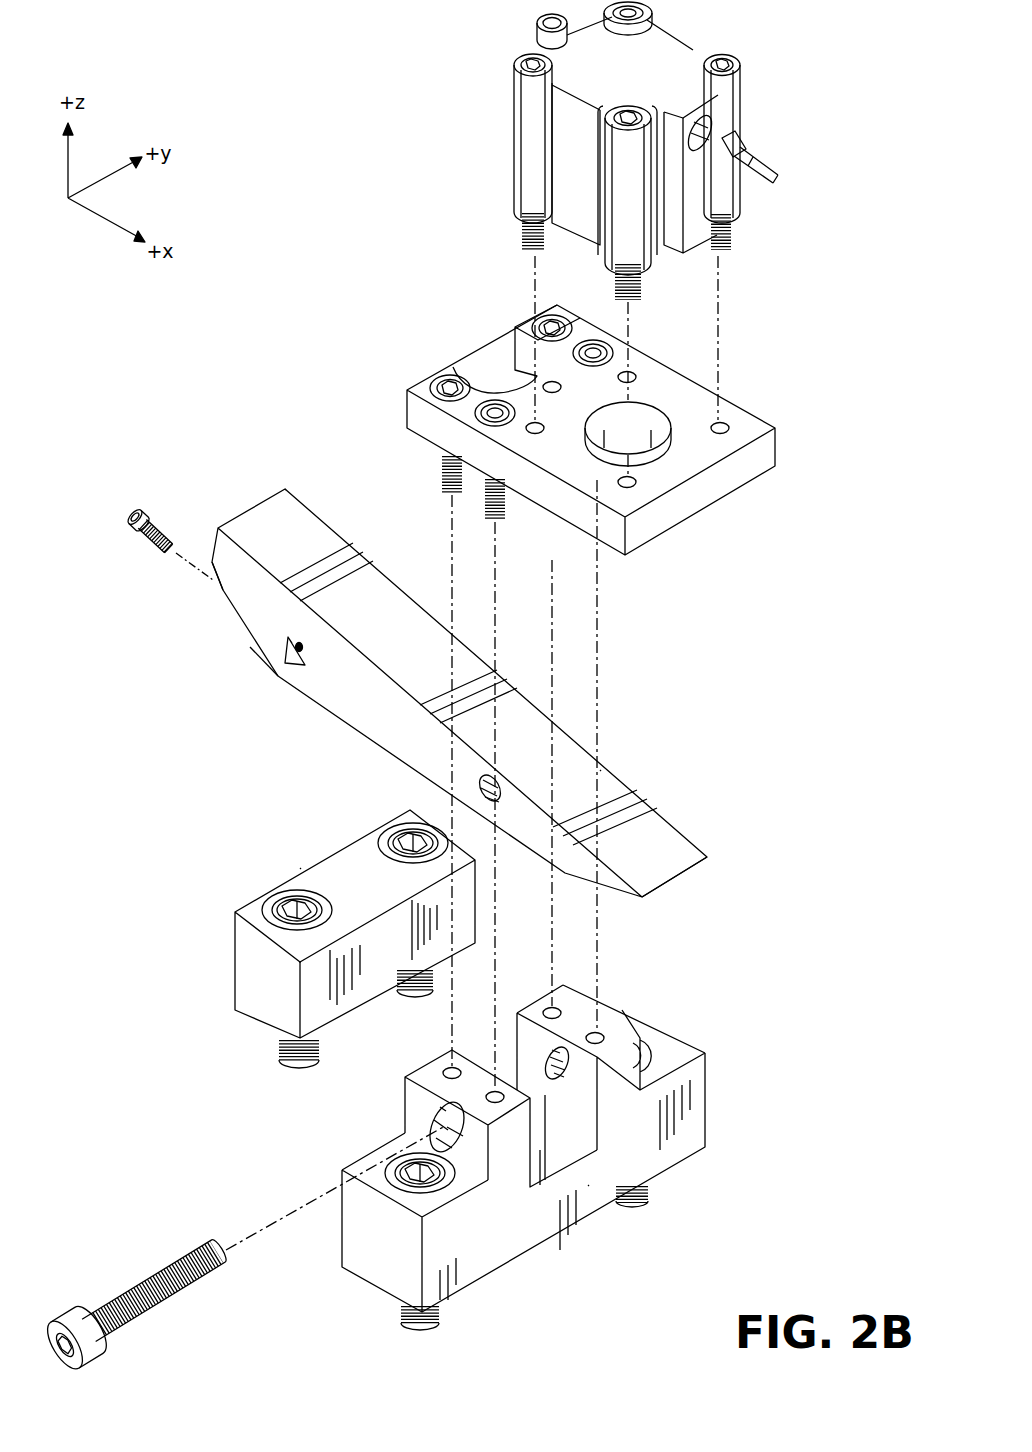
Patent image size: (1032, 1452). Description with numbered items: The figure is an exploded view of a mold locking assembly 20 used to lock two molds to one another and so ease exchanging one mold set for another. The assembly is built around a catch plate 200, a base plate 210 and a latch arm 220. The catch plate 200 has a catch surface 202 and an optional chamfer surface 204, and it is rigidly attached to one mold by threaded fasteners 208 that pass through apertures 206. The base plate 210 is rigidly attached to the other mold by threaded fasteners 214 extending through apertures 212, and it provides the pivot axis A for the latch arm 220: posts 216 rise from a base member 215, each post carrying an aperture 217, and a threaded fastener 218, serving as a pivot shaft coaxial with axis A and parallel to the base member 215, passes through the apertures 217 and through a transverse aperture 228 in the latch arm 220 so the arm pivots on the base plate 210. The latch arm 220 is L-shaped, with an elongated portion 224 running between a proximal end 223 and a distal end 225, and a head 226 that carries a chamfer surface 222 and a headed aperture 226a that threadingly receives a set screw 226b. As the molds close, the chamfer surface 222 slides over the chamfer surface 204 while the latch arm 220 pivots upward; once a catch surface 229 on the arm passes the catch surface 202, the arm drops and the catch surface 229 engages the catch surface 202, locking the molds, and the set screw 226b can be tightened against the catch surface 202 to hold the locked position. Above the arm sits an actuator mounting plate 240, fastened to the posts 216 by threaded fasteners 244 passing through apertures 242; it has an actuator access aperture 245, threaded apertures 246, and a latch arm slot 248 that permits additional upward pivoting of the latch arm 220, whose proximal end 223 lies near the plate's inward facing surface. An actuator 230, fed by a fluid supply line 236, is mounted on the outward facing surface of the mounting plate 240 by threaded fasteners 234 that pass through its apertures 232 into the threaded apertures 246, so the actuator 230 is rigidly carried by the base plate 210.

The mold locking assembly 20 is at (130, 382).
The catch plate 200 is at (229, 967).
The catch surface 202 is at (305, 869).
The chamfer surface 204 is at (300, 950).
The apertures 206 is at (390, 831).
The threaded fasteners 208 is at (415, 996).
The base plate 210 is at (727, 1099).
The apertures 212 is at (652, 1046).
The threaded fasteners 214 is at (640, 1203).
The base member 215 is at (590, 1192).
The posts 216 is at (405, 1074).
The aperture 217 is at (422, 1119).
The threaded fastener 218 is at (132, 1300).
The latch arm 220 is at (295, 497).
The chamfer surface 222 is at (208, 590).
The proximal end 223 is at (680, 880).
The elongated portion 224 is at (605, 781).
The distal end 225 is at (252, 507).
The head 226 is at (264, 651).
The headed aperture 226a is at (302, 656).
The set screw 226b is at (165, 525).
The aperture 228 is at (478, 791).
The catch surface 229 is at (288, 662).
The actuator 230 is at (690, 31).
The apertures 232 is at (745, 68).
The threaded fasteners 234 is at (524, 58).
The fluid supply line 236 is at (760, 150).
The actuator mounting plate 240 is at (781, 446).
The apertures 242 is at (552, 317).
The threaded fasteners 244 is at (442, 470).
The actuator access aperture 245 is at (648, 404).
The threaded apertures 246 is at (724, 424).
The latch arm slot 248 is at (479, 352).